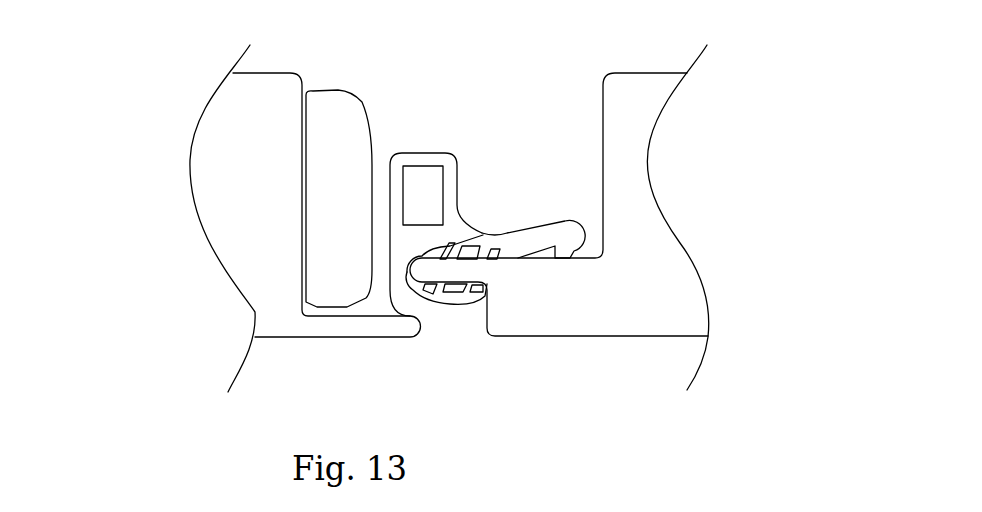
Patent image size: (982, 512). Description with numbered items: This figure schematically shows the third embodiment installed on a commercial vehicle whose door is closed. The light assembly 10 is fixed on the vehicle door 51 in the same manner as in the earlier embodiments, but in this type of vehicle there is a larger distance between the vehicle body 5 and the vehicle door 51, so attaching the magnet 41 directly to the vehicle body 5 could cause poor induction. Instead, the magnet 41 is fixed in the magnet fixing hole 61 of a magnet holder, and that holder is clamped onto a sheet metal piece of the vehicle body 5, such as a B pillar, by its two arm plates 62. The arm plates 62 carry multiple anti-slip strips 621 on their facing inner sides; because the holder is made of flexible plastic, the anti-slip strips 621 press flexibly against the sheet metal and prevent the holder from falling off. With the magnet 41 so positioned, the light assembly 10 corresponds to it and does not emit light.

The vehicle body 5 is at (650, 88).
The light assembly 10 is at (315, 257).
The magnet 41 is at (412, 175).
The vehicle door 51 is at (215, 167).
The magnet fixing hole 61 is at (442, 183).
The arm plates 62 is at (500, 240).
The anti-slip strips 621 is at (448, 253).